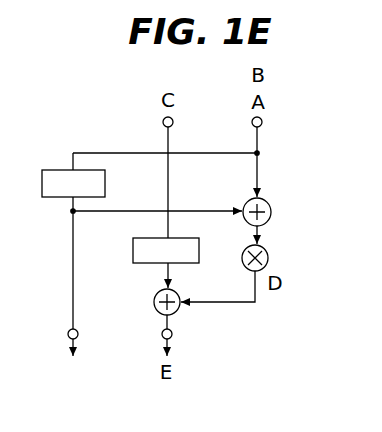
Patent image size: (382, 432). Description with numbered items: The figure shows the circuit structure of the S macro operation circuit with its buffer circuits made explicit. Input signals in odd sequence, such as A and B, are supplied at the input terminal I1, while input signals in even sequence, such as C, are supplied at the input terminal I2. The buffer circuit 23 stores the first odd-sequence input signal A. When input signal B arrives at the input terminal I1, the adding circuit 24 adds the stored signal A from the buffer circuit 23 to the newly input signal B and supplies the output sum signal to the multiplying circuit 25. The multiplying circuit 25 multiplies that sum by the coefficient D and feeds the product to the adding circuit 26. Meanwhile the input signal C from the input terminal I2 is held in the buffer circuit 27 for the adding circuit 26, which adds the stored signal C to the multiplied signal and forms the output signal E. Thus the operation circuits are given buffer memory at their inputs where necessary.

The input terminal I1 is at (259, 128).
The input terminal I2 is at (170, 128).
The buffer circuit 23 is at (107, 183).
The adding circuit 24 is at (272, 212).
The multiplying circuit 25 is at (269, 258).
The adding circuit 26 is at (176, 294).
The buffer circuit 27 is at (185, 238).